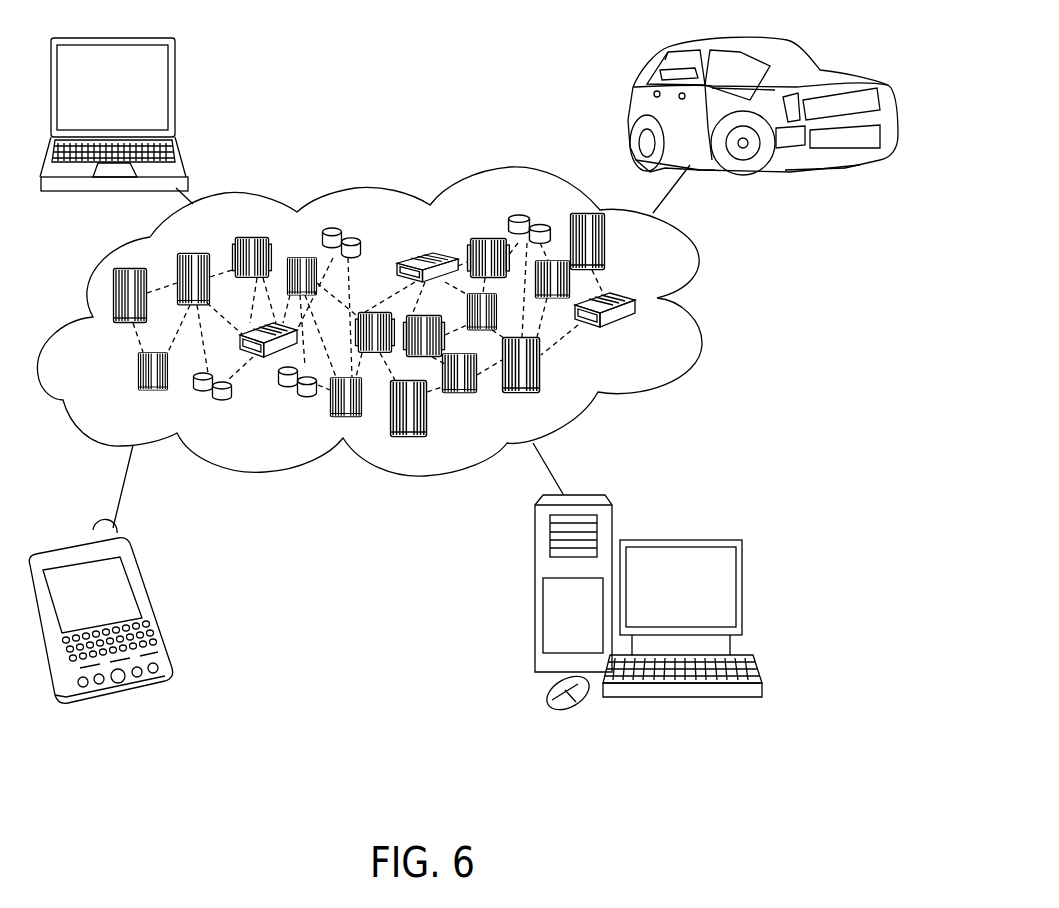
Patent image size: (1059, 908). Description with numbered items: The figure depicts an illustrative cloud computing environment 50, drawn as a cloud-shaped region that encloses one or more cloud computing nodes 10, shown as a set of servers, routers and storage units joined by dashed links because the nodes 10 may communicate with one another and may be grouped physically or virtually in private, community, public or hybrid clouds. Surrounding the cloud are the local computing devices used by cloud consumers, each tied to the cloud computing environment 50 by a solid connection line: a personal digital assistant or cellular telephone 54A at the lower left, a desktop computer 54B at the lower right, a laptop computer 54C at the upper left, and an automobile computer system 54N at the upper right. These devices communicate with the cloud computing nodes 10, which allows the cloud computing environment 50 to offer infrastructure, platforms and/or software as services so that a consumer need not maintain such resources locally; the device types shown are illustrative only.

The cloud computing nodes 10 is at (650, 349).
The cloud computing environment 50 is at (695, 253).
The personal digital assistant or cellular telephone 54A is at (145, 587).
The desktop computer 54B is at (742, 587).
The laptop computer 54C is at (176, 90).
The automobile computer system 54N is at (813, 55).